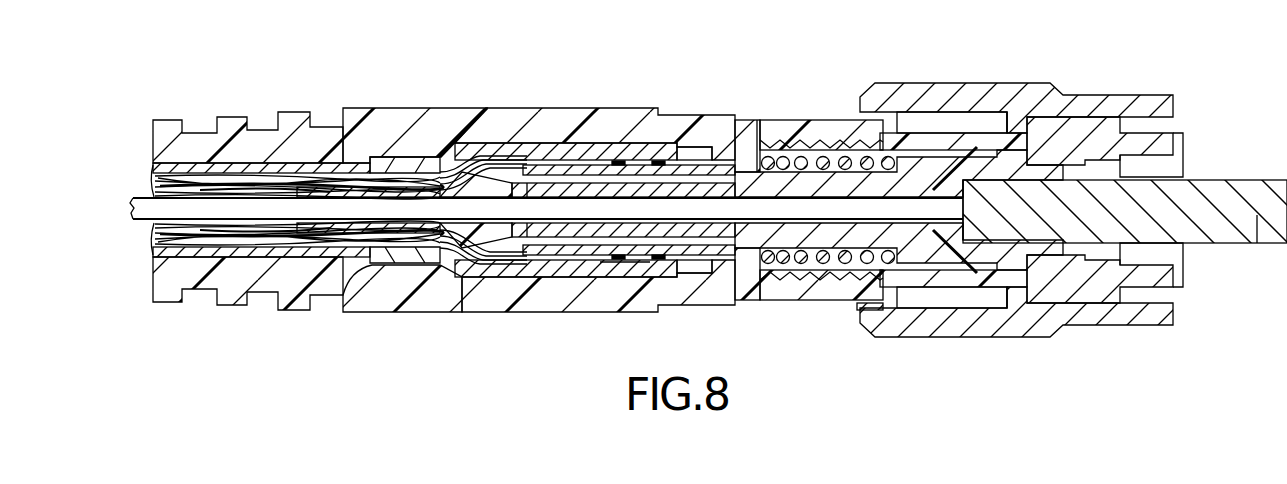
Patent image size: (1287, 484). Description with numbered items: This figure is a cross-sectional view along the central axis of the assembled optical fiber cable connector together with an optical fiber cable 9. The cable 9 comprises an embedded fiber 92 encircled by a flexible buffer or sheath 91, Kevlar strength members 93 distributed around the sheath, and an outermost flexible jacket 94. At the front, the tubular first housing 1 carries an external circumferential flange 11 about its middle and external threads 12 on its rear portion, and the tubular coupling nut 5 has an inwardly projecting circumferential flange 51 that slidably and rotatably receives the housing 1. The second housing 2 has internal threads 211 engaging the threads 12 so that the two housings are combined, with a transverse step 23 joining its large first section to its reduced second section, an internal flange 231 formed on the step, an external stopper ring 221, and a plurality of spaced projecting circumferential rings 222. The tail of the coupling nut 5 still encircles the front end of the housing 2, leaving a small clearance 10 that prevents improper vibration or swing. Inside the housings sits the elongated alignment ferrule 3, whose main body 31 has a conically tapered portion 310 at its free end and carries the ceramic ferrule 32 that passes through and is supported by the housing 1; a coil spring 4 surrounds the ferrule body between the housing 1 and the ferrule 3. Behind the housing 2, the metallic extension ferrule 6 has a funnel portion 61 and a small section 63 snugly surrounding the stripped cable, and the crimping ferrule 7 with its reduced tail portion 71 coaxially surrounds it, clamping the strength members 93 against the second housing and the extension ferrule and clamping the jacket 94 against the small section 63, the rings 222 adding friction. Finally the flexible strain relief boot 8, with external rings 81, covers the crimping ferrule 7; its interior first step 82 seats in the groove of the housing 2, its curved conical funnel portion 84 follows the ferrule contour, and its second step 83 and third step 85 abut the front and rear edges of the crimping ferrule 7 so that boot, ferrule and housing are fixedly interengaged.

The first housing 1 is at (1185, 133).
The second housing 2 is at (813, 116).
The alignment ferrule 3 is at (937, 268).
The coil spring 4 is at (800, 263).
The coupling nut 5 is at (1011, 84).
The extension ferrule 6 is at (500, 258).
The crimping ferrule 7 is at (624, 142).
The strain relief boot 8 is at (440, 115).
The optical fiber cable 9 is at (125, 210).
The small clearance 10 is at (864, 309).
The circumferential flange 11 is at (1088, 122).
The external threads 12 is at (885, 140).
The step 23 is at (747, 277).
The main body 31 is at (972, 272).
The ceramic ferrule 32 is at (1237, 200).
The circumferential flange 51 is at (1022, 297).
The funnel portion 61 is at (451, 248).
The small section 63 is at (320, 228).
The tail portion 71 is at (393, 162).
The circumferential rings 81 is at (230, 121).
The first rearward facing step 82 is at (700, 155).
The second rearward facing step 83 is at (624, 262).
The curved conical funnel portion 84 is at (478, 125).
The third forward facing step 85 is at (338, 292).
The buffer or sheath 91 is at (433, 267).
The fiber 92 is at (1258, 215).
The strength members 93 is at (153, 192).
The jacket 94 is at (155, 248).
The internal threads 211 is at (833, 293).
The stopper ring 221 is at (698, 270).
The projecting circumferential rings 222 is at (617, 258).
The internal flange 231 is at (757, 176).
The conically tapered portion 310 is at (541, 188).